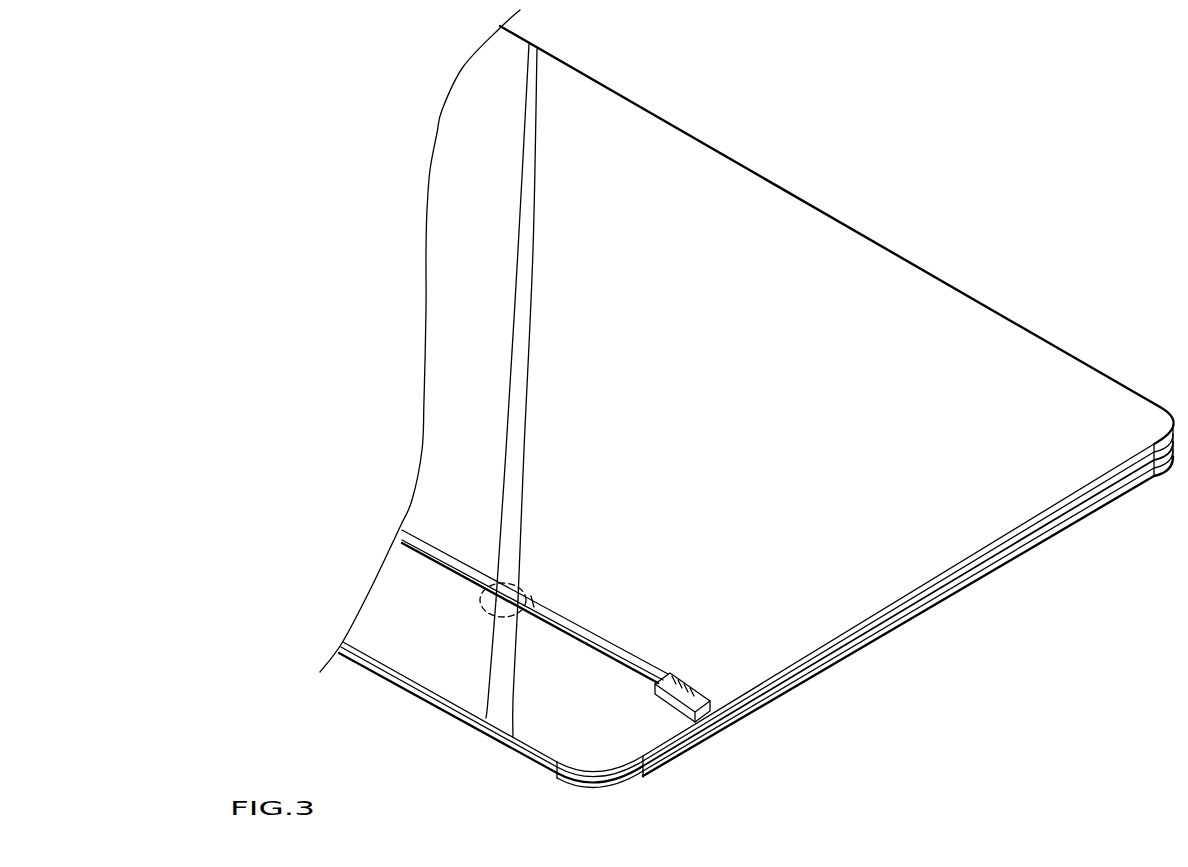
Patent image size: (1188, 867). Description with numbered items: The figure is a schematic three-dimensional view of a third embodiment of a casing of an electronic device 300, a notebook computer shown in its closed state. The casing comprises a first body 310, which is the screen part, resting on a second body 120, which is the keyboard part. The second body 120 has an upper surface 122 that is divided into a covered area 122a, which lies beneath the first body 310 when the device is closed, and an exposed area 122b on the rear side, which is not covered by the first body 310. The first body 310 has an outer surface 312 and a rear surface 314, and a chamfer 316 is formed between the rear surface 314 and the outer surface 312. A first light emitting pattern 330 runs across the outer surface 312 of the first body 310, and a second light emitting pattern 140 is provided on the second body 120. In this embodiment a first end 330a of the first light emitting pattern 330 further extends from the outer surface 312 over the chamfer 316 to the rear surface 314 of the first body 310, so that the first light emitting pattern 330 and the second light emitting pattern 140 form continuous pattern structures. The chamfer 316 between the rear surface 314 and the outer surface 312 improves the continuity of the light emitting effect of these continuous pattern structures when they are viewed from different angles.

The electronic device 300 is at (379, 296).
The first body 310 is at (1069, 386).
The outer surface 312 is at (753, 199).
The rear surface 314 is at (474, 590).
The chamfer 316 is at (456, 559).
The first light emitting pattern 330 is at (528, 203).
The first end 330a is at (536, 601).
The second body 120 is at (457, 687).
The second light emitting pattern 140 is at (502, 720).
The upper surface 122 is at (988, 704).
The covered area 122a is at (843, 645).
The exposed area 122b is at (638, 727).